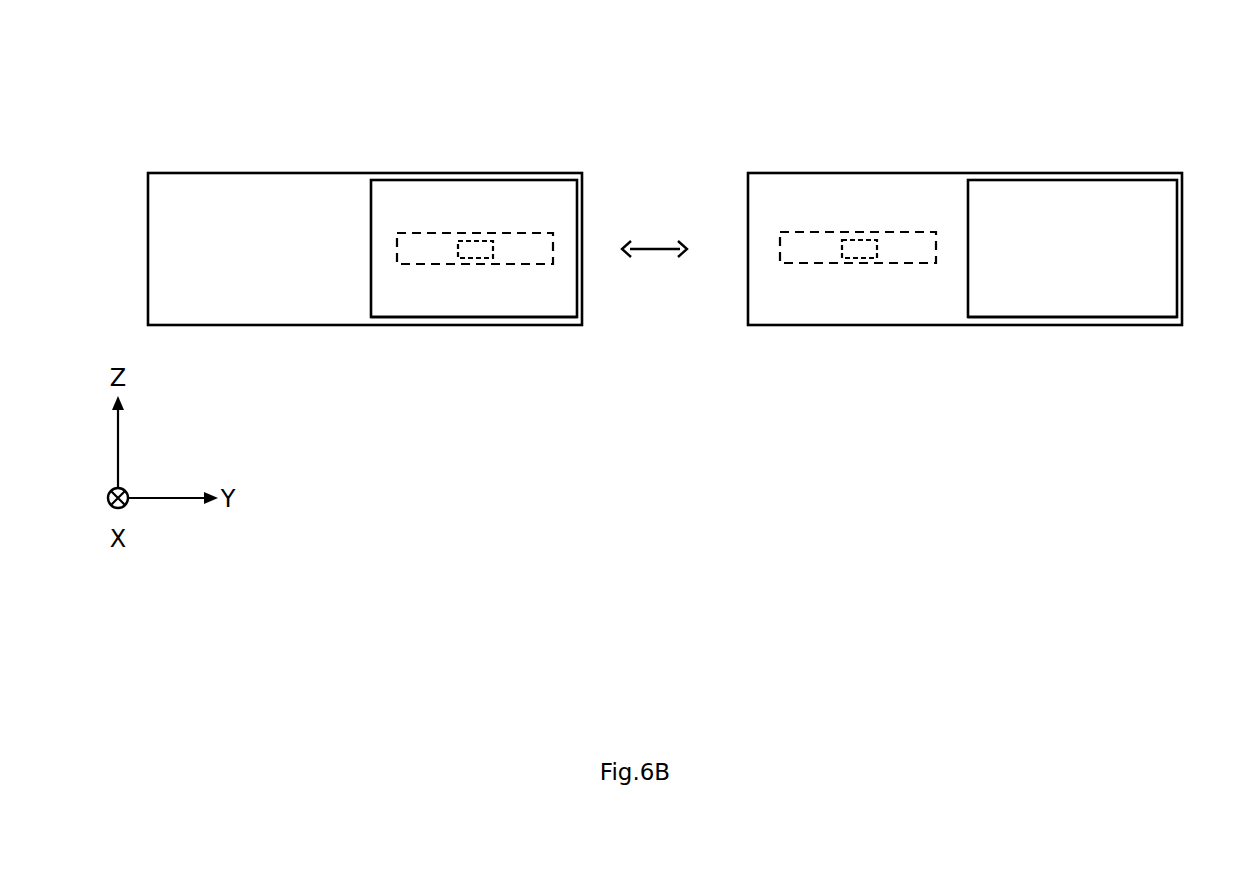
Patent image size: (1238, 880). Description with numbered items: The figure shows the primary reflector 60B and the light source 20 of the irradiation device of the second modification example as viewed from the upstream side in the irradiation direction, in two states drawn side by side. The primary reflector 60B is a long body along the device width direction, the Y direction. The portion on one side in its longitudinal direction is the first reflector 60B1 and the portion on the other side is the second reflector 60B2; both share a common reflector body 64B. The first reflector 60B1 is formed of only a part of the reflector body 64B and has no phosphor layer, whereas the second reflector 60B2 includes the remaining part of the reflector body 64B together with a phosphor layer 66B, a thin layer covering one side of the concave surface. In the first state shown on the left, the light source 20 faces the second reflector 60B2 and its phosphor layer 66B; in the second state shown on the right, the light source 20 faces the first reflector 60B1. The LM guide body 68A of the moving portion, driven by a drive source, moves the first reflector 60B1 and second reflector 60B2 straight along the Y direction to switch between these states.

The primary reflector 60B is at (227, 92).
The first reflector 60B1 is at (282, 182).
The second reflector 60B2 is at (458, 178).
The phosphor layer 66B is at (512, 182).
The reflector body 64B is at (482, 322).
The LM guide body 68A is at (440, 264).
The light source 20 is at (457, 247).